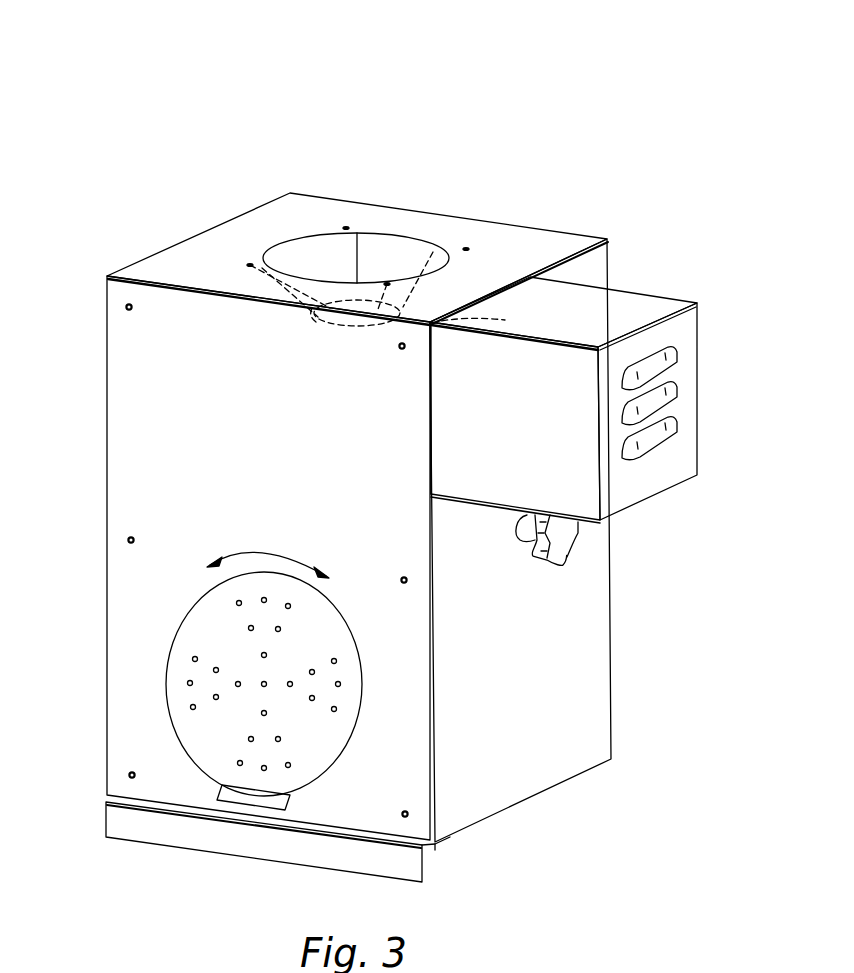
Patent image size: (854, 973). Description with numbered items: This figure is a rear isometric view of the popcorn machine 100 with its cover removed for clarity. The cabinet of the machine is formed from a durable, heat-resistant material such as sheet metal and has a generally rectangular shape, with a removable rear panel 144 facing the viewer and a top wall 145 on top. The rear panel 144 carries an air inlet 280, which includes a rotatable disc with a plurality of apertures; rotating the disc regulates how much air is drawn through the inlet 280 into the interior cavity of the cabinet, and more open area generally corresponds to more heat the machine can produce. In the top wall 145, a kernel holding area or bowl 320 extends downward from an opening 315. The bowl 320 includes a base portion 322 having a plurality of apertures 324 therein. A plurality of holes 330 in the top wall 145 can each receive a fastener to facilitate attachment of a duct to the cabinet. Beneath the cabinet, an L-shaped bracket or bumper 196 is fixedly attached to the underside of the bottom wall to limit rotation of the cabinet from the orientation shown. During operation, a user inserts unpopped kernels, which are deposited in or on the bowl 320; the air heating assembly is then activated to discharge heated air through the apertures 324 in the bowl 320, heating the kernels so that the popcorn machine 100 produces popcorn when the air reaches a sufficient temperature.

The popcorn machine 100 is at (363, 497).
The rear panel 144 is at (140, 473).
The top wall 145 is at (348, 231).
The L-shaped bracket or bumper 196 is at (250, 839).
The air inlet 280 is at (146, 672).
The opening 315 is at (247, 266).
The bowl 320 is at (322, 318).
The base portion 322 is at (388, 281).
The apertures 324 is at (488, 317).
The holes 330 is at (346, 227).